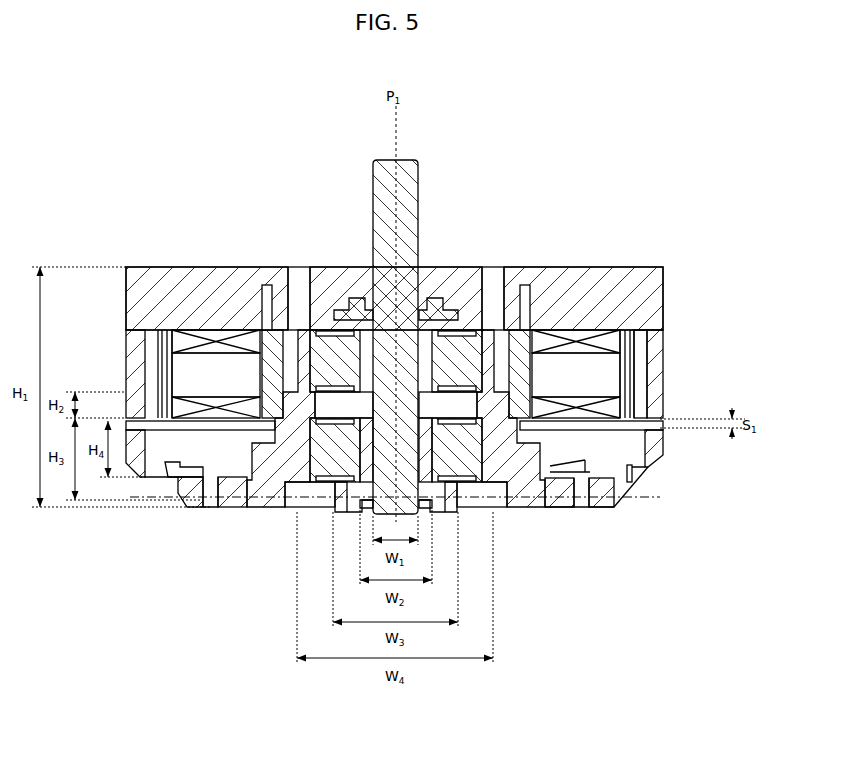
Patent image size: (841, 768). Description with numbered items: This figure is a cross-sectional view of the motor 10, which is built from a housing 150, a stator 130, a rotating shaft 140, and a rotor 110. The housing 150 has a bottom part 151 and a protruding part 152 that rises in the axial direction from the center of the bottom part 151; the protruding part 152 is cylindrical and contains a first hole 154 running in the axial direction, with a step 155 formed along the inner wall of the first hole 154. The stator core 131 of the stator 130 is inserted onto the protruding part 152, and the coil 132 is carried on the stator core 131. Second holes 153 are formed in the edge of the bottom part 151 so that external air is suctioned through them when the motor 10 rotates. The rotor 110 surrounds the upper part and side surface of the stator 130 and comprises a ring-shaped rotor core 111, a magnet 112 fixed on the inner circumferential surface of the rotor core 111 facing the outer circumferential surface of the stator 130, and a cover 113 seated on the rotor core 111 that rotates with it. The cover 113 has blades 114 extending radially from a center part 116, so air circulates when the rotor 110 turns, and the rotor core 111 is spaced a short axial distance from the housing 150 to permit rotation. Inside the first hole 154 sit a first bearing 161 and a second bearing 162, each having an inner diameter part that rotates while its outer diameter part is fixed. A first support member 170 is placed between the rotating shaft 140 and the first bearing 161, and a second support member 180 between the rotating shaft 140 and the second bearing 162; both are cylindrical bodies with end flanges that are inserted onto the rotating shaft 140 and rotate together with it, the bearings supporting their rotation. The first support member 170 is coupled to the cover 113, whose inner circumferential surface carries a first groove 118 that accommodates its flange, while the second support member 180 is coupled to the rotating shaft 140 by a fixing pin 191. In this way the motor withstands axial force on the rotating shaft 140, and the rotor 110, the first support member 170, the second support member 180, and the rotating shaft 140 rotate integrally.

The motor 10 is at (67, 103).
The rotor 110 is at (431, 299).
The rotor core 111 is at (655, 336).
The magnet 112 is at (642, 355).
The cover 113 is at (493, 264).
The blades 114 is at (598, 276).
The center part 116 is at (455, 276).
The first groove 118 is at (338, 308).
The stator 130 is at (454, 322).
The stator core 131 is at (603, 373).
The coil 132 is at (603, 407).
The rotating shaft 140 is at (412, 175).
The housing 150 is at (418, 505).
The bottom part 151 is at (602, 495).
The protruding part 152 is at (652, 477).
The second holes 153 is at (634, 470).
The first hole 154 is at (305, 370).
The step 155 is at (540, 488).
The first bearing 161 is at (268, 360).
The second bearing 162 is at (298, 484).
The first support member 170 is at (330, 400).
The second support member 180 is at (333, 492).
The fixing pin 191 is at (424, 508).